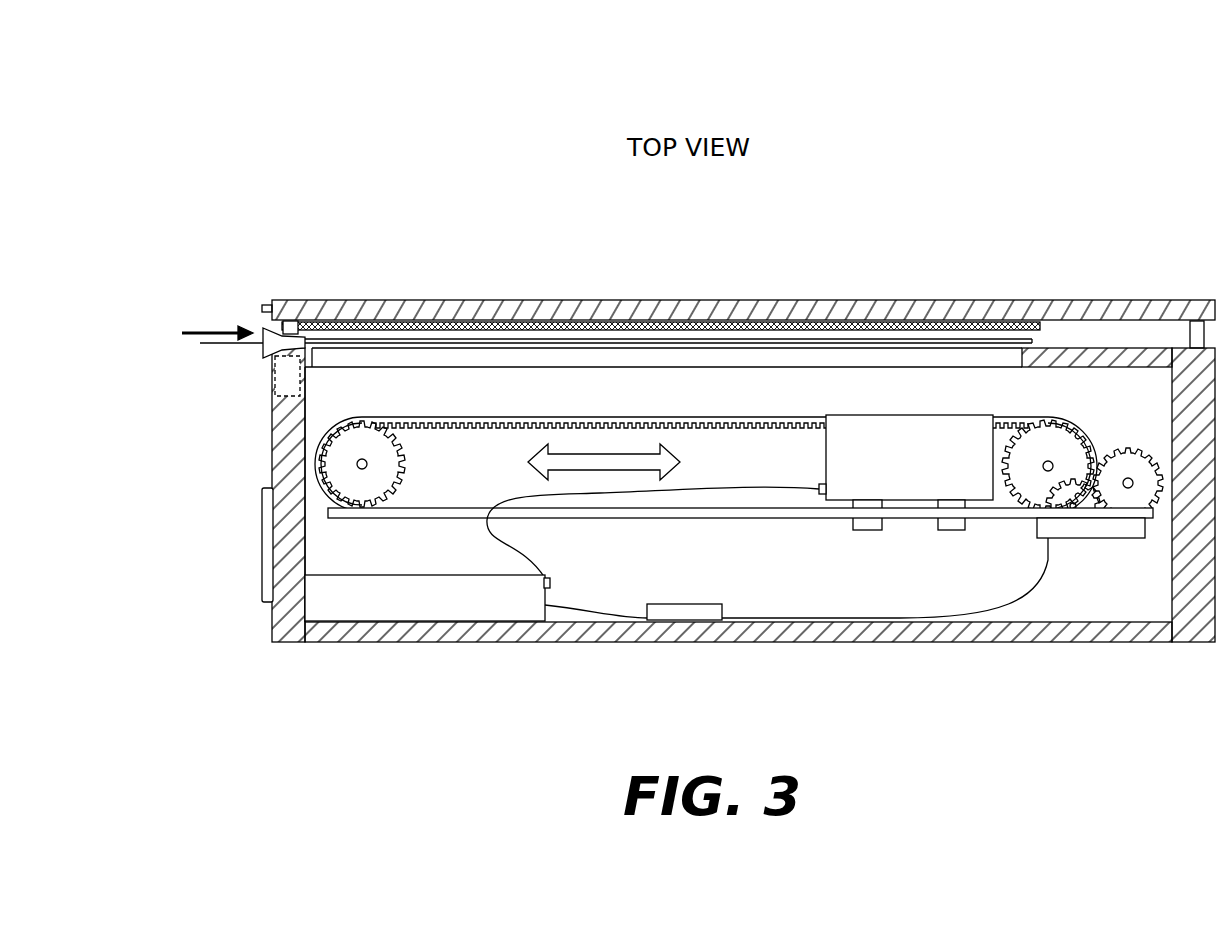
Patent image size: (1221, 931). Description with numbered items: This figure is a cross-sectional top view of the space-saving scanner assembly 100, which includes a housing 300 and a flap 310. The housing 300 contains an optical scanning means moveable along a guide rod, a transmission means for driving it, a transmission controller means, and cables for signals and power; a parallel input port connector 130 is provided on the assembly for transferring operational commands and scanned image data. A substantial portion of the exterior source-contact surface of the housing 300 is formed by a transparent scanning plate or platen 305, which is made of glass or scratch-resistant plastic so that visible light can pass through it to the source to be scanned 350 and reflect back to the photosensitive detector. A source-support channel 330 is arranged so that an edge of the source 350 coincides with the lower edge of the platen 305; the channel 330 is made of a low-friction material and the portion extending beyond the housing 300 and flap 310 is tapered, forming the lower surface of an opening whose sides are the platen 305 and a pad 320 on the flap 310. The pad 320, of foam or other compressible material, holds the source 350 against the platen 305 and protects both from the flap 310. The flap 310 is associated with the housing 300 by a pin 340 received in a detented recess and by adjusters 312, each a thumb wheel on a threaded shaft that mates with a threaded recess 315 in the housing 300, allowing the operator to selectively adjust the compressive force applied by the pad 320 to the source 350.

The space-saving scanner assembly 100 is at (670, 110).
The parallel input port connector 130 is at (265, 607).
The housing 300 is at (1055, 633).
The platen 305 is at (748, 358).
The flap 310 is at (708, 305).
The adjuster 312 is at (262, 305).
The threaded recess 315 is at (283, 372).
The pad 320 is at (513, 310).
The source-support channel 330 is at (266, 362).
The pin 340 is at (1195, 322).
The source to be scanned 350 is at (246, 355).